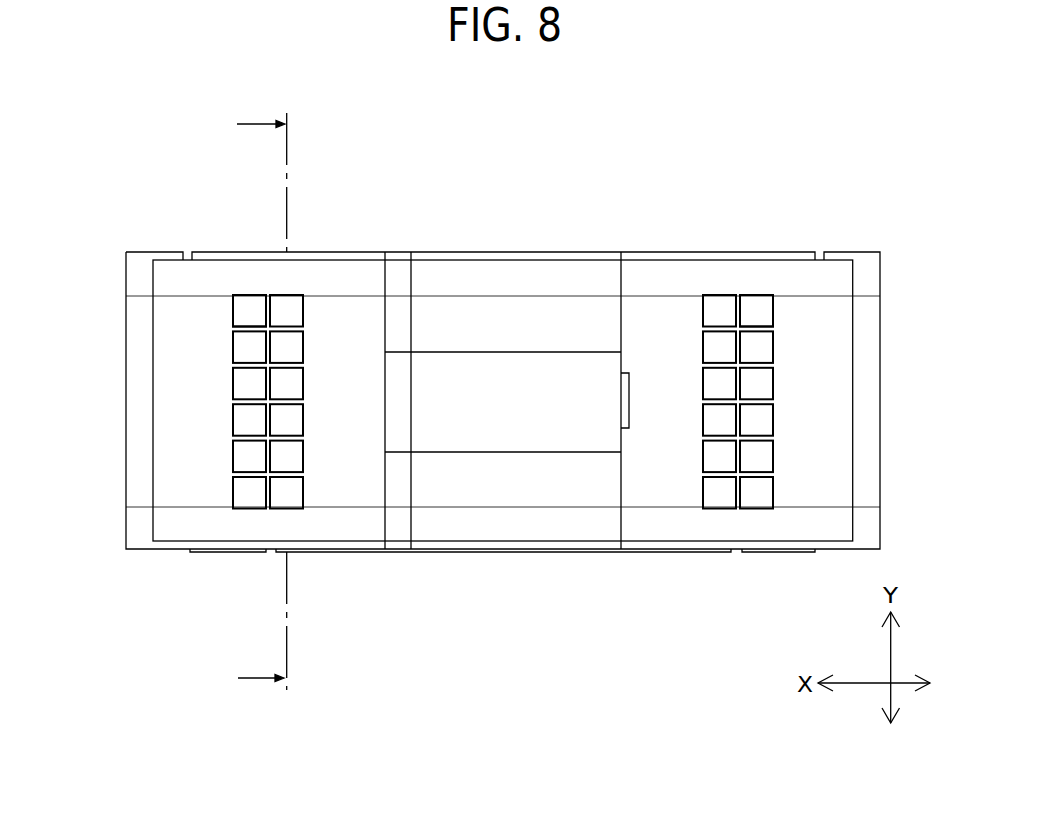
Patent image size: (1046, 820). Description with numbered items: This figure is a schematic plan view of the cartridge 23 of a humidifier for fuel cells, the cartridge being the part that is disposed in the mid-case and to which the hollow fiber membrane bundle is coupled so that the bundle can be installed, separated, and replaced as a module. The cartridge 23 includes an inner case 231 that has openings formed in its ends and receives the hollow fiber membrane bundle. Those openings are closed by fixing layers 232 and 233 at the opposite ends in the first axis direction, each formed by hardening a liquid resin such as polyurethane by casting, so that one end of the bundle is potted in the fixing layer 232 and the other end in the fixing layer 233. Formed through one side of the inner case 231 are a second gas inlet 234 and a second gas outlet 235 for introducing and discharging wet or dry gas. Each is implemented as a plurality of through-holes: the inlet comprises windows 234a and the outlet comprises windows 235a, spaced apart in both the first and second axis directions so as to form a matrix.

The cartridge 23 is at (73, 119).
The inner case 231 is at (503, 523).
The fixing layer 232 is at (126, 403).
The fixing layer 233 is at (880, 402).
The second gas inlet 234 is at (245, 508).
The window 234a is at (253, 311).
The second gas outlet 235 is at (760, 508).
The window 235a is at (753, 311).